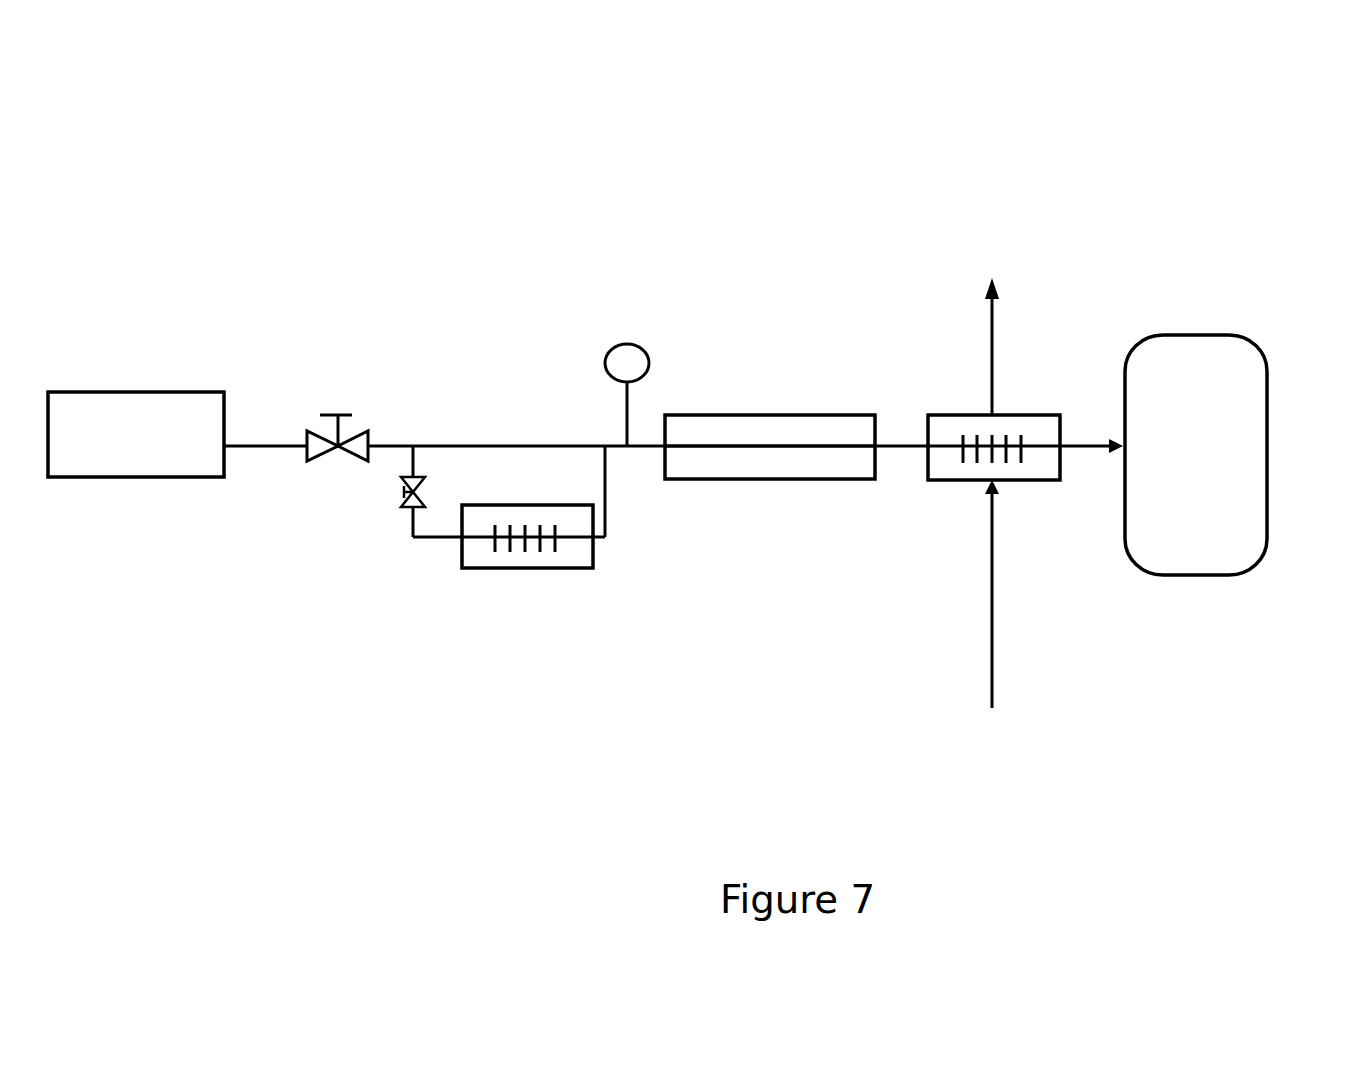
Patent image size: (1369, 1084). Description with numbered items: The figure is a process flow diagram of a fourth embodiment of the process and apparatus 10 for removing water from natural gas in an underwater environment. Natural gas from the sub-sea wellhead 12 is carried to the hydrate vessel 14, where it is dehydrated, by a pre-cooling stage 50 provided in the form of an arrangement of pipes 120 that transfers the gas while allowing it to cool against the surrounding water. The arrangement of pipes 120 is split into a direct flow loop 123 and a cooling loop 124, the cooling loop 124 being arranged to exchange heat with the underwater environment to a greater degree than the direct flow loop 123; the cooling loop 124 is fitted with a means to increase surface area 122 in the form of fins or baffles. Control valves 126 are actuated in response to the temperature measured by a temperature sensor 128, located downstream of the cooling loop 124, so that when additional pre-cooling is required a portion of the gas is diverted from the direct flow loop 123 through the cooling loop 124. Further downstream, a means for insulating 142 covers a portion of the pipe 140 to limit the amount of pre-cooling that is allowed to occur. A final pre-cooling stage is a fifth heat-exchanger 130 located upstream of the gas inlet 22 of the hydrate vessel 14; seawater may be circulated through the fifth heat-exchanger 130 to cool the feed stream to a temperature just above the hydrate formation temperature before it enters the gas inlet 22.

The process and apparatus 10 is at (1230, 218).
The sub-sea wellhead 12 is at (125, 478).
The hydrate vessel 14 is at (1268, 463).
The gas inlet 22 is at (1060, 415).
The pre-cooling stage 50 is at (546, 303).
The arrangement of pipes 120 is at (546, 303).
The means to increase surface area 122 is at (510, 568).
The direct flow loop 123 is at (455, 442).
The cooling loop 124 is at (607, 518).
The control valve 126 is at (367, 430).
The temperature sensor 128 is at (640, 342).
The fifth heat-exchanger 130 is at (1007, 482).
The pipe 140 is at (827, 445).
The means for insulating 142 is at (767, 413).